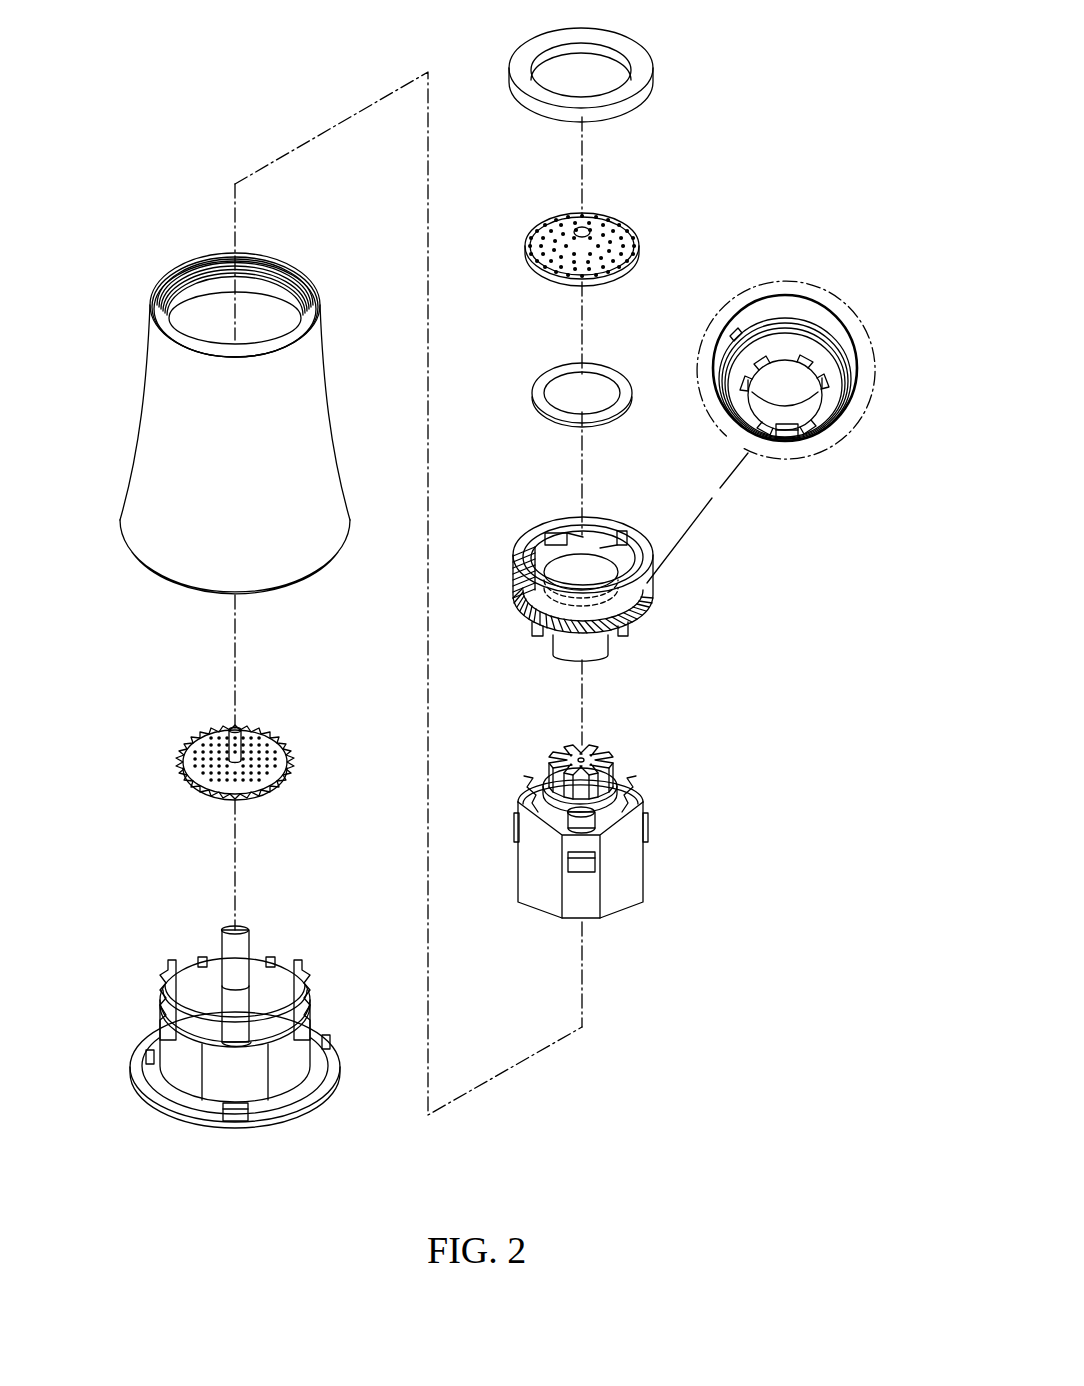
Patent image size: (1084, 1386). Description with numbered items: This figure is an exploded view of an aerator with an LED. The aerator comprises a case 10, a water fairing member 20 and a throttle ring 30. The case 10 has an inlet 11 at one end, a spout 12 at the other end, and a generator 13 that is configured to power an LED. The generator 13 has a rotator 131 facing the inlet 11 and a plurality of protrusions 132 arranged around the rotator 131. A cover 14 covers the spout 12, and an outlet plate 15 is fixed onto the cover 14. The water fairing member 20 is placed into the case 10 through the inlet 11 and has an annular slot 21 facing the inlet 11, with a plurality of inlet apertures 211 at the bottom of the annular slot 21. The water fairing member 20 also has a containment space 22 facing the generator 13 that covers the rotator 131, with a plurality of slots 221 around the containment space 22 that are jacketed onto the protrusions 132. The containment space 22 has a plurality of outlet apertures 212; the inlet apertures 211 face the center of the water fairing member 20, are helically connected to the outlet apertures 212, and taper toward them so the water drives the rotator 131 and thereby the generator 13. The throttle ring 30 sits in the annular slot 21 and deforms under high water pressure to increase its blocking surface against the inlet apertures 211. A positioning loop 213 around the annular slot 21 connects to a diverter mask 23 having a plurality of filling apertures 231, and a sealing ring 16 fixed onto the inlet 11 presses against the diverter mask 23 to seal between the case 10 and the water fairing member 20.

The case 10 is at (122, 372).
The inlet 11 is at (205, 257).
The spout 12 is at (182, 588).
The generator 13 is at (627, 877).
The rotator 131 is at (635, 753).
The protrusions 132 is at (642, 802).
The cover 14 is at (173, 1102).
The outlet plate 15 is at (273, 735).
The sealing ring 16 is at (643, 65).
The water fairing member 20 is at (830, 300).
The annular slot 21 is at (620, 535).
The inlet apertures 211 is at (648, 583).
The outlet apertures 212 is at (835, 387).
The positioning loop 213 is at (545, 538).
The containment space 22 is at (832, 422).
The slots 221 is at (788, 440).
The diverter mask 23 is at (637, 247).
The filling apertures 231 is at (613, 222).
The throttle ring 30 is at (545, 366).